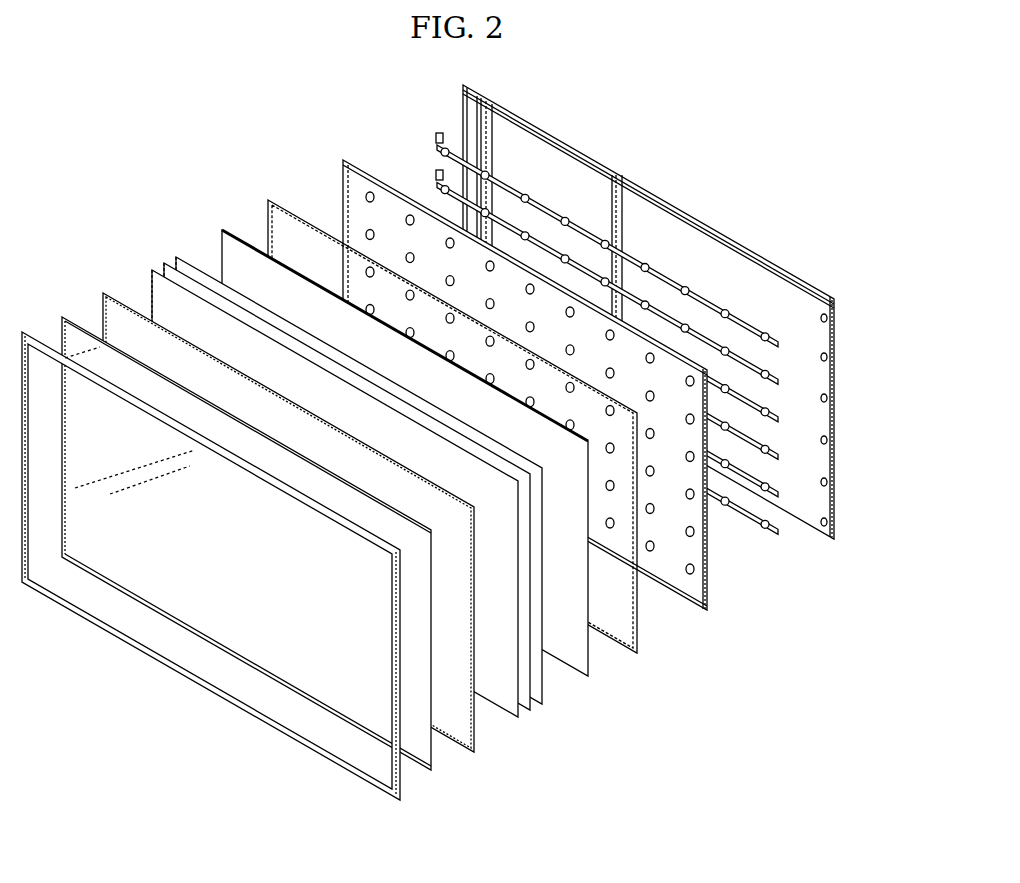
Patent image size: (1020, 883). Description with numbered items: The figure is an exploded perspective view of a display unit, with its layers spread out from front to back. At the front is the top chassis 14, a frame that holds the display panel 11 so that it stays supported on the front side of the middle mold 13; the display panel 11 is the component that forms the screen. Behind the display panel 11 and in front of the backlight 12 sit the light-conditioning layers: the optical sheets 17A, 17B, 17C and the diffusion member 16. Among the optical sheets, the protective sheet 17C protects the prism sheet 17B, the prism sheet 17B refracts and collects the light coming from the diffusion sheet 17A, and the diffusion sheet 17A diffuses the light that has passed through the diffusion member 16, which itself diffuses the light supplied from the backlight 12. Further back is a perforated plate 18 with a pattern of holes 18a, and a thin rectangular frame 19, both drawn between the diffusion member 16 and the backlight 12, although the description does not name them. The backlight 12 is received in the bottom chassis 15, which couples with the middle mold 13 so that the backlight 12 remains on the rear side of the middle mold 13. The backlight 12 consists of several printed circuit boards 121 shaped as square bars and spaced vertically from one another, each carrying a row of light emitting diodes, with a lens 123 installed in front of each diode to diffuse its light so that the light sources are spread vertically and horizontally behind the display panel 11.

The display panel 11 is at (434, 769).
The backlight 12 is at (663, 333).
The printed circuit board 121 is at (781, 387).
The lens 123 is at (727, 311).
The middle mold 13 is at (486, 756).
The top chassis 14 is at (360, 790).
The bottom chassis 15 is at (846, 307).
The diffusion member 16 is at (601, 680).
The diffusion sheet 17A is at (544, 700).
The prism sheet 17B is at (532, 711).
The protective sheet 17C is at (520, 719).
The reflective plate 18 is at (556, 391).
The hole 18a is at (407, 213).
The mold frame 19 is at (278, 196).